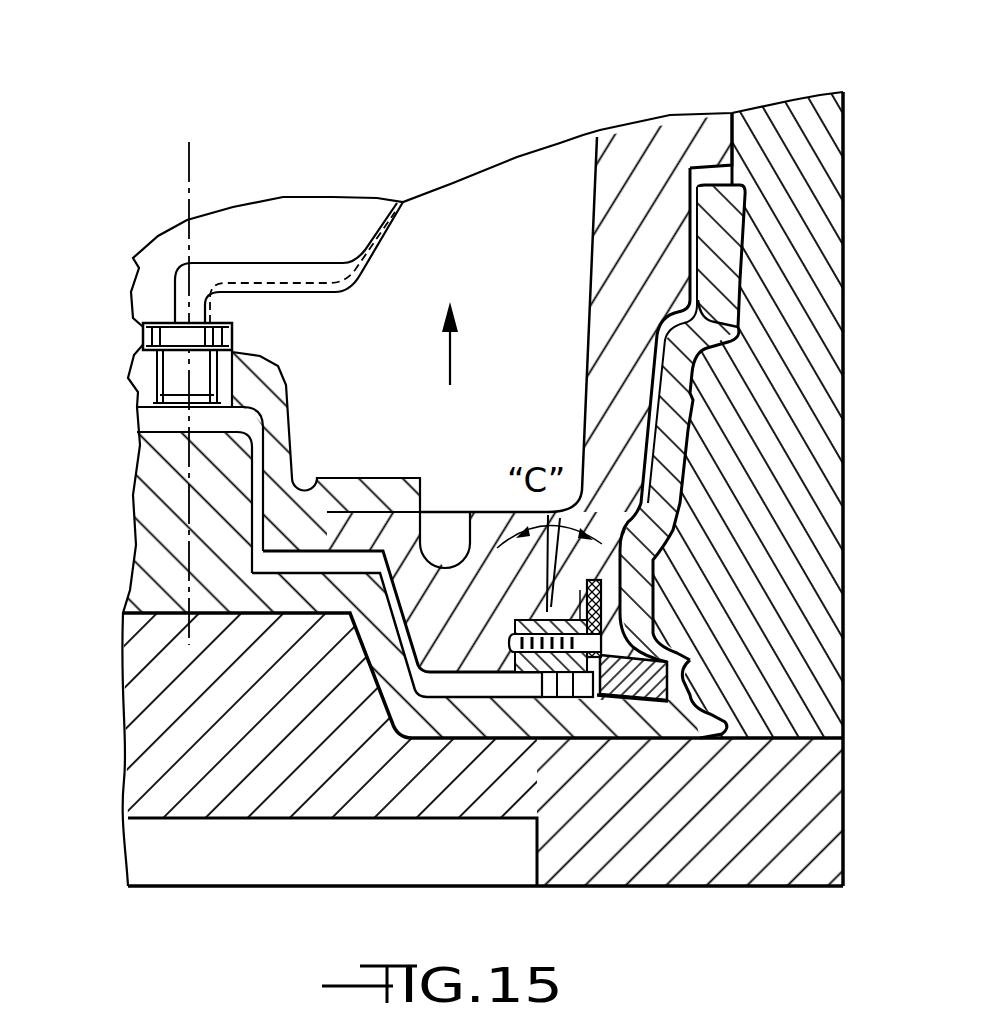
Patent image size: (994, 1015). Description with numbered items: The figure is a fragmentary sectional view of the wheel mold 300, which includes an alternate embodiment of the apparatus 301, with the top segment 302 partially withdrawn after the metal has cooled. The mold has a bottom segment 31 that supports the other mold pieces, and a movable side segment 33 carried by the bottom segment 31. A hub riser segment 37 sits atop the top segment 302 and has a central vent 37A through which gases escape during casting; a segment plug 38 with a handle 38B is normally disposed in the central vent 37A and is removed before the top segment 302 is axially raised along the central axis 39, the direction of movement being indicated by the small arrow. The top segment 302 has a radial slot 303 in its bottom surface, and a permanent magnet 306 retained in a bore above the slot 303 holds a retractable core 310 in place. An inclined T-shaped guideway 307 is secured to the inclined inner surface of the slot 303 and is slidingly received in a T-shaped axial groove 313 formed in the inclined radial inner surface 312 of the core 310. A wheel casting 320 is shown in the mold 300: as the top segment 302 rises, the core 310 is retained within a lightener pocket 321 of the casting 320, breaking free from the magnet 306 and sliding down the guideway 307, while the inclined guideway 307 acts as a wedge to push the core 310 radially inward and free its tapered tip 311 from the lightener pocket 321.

The wheel mold 300 is at (608, 98).
The central axis 39 is at (188, 178).
The handle 38B is at (357, 228).
The segment plug 38 is at (146, 336).
The central vent 37A is at (157, 378).
The hub riser segment 37 is at (286, 430).
The top segment 302 is at (500, 485).
The inclined T-shaped guideway 307 is at (547, 618).
The permanent magnet 306 is at (605, 580).
The radial slot 303 is at (625, 620).
The lightener pocket 321 is at (672, 663).
The side segment 33 is at (783, 441).
The radial inner surface 312 is at (535, 678).
The T-shaped axial groove 313 is at (560, 698).
The retractable core 310 is at (673, 797).
The apparatus 301 is at (690, 782).
The tapered tip 311 is at (690, 744).
The bottom segment 31 is at (773, 838).
The wheel casting 320 is at (400, 712).